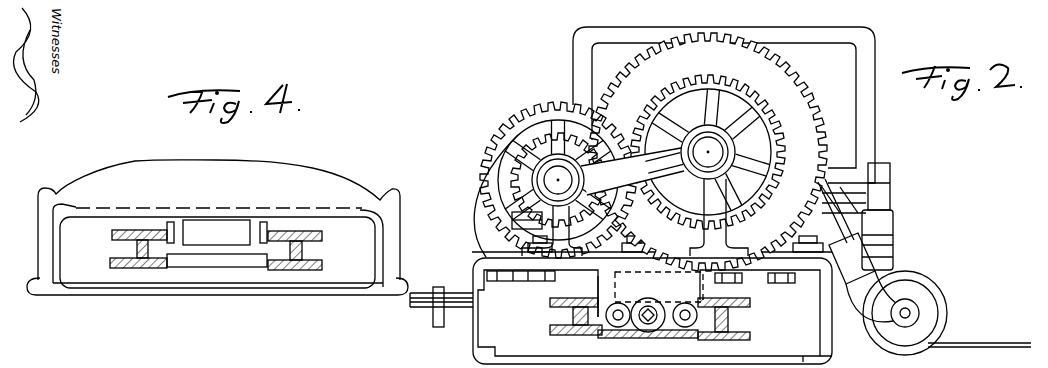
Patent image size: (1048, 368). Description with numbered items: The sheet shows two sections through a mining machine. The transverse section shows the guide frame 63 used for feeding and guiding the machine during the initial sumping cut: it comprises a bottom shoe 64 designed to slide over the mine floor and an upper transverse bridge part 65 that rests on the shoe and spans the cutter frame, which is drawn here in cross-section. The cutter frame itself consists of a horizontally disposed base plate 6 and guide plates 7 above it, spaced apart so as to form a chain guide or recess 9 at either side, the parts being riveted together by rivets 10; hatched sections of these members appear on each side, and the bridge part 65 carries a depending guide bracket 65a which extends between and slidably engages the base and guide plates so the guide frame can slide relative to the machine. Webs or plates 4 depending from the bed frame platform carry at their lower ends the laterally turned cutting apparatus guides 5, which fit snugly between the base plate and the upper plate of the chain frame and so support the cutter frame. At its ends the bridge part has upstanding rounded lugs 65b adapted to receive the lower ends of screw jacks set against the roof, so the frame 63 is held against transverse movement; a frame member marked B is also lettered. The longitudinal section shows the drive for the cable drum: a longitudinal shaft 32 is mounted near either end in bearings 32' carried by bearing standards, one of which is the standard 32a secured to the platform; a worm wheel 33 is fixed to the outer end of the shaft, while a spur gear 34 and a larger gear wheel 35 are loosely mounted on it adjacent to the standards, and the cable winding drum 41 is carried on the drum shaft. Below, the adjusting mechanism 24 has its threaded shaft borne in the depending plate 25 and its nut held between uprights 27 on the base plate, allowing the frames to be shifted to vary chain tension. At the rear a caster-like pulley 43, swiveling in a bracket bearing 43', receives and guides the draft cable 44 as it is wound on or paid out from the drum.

In FIG. 4, the web 4 is at (273, 232).
In FIG. 2, the web 4 is at (728, 293).
In FIG. 4, the cutting apparatus guide 5 is at (157, 245).
In FIG. 2, the cutting apparatus guide 5 is at (722, 347).
In FIG. 4, the base plate 6 is at (116, 236).
In FIG. 2, the base plate 6 is at (565, 306).
In FIG. 4, the guide plate 7 is at (157, 243).
In FIG. 2, the guide plate 7 is at (560, 298).
In FIG. 4, the chain guide 9 is at (112, 259).
In FIG. 2, the chain guide 9 is at (553, 317).
In FIG. 2, the rivet 10 is at (560, 335).
In FIG. 2, the adjusting mechanism 24 is at (659, 287).
In FIG. 2, the depending plate 25 is at (612, 333).
In FIG. 2, the upright 27 is at (648, 332).
In FIG. 2, the shaft 32 is at (623, 171).
In FIG. 2, the bearing 32' is at (514, 170).
In FIG. 2, the bearing standard 32a is at (540, 222).
In FIG. 2, the worm wheel 33 is at (537, 137).
In FIG. 2, the spur gear 34 is at (543, 143).
In FIG. 2, the gear wheel 35 is at (520, 123).
In FIG. 2, the cable winding drum 41 is at (803, 101).
In FIG. 2, the pulley 43 is at (878, 250).
In FIG. 2, the bracket bearing 43' is at (897, 216).
In FIG. 2, the draft cable 44 is at (947, 313).
In FIG. 4, the guide frame 63 is at (340, 181).
In FIG. 4, the shoe 64 is at (282, 298).
In FIG. 4, the bridge part 65 is at (230, 172).
In FIG. 4, the guide bracket 65a is at (228, 250).
In FIG. 4, the lug 65b is at (398, 186).
In FIG. 4, the frame B is at (217, 254).
In FIG. 2, the frame B is at (652, 311).